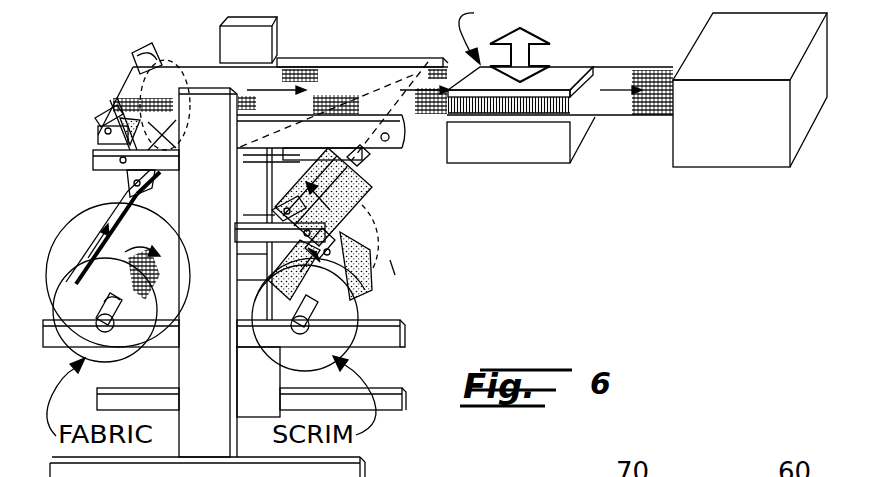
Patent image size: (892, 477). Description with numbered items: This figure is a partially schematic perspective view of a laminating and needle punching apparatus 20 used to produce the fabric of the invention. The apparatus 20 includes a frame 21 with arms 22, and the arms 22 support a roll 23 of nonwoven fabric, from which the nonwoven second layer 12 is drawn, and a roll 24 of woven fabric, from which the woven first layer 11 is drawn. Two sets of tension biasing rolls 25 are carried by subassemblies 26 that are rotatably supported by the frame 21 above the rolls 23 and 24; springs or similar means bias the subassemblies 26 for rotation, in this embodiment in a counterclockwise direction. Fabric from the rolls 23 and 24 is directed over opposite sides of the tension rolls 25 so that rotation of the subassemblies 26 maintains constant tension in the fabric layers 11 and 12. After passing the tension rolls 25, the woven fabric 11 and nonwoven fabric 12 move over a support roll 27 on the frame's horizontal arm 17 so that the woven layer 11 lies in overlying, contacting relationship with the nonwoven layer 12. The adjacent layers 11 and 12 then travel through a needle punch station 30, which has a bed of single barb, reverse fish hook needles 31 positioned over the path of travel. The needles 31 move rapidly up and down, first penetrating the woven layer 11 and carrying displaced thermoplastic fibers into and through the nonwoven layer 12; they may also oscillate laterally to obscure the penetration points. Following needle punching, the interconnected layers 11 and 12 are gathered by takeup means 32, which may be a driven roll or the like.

The woven first layer 11 is at (106, 244).
The nonwoven second layer 12 is at (340, 182).
The horizontal arm 17 is at (197, 72).
The laminating and needle punching apparatus 20 is at (92, 188).
The frame 21 is at (258, 55).
The arms 22 is at (60, 335).
The roll of nonwoven fabric 23 is at (365, 282).
The roll of woven fabric 24 is at (68, 290).
The tension biasing rolls 25 is at (130, 72).
The subassemblies 26 is at (97, 126).
The support roll 27 is at (428, 62).
The needle punch station 30 is at (580, 55).
The needles 31 is at (535, 116).
The takeup means 32 is at (756, 175).